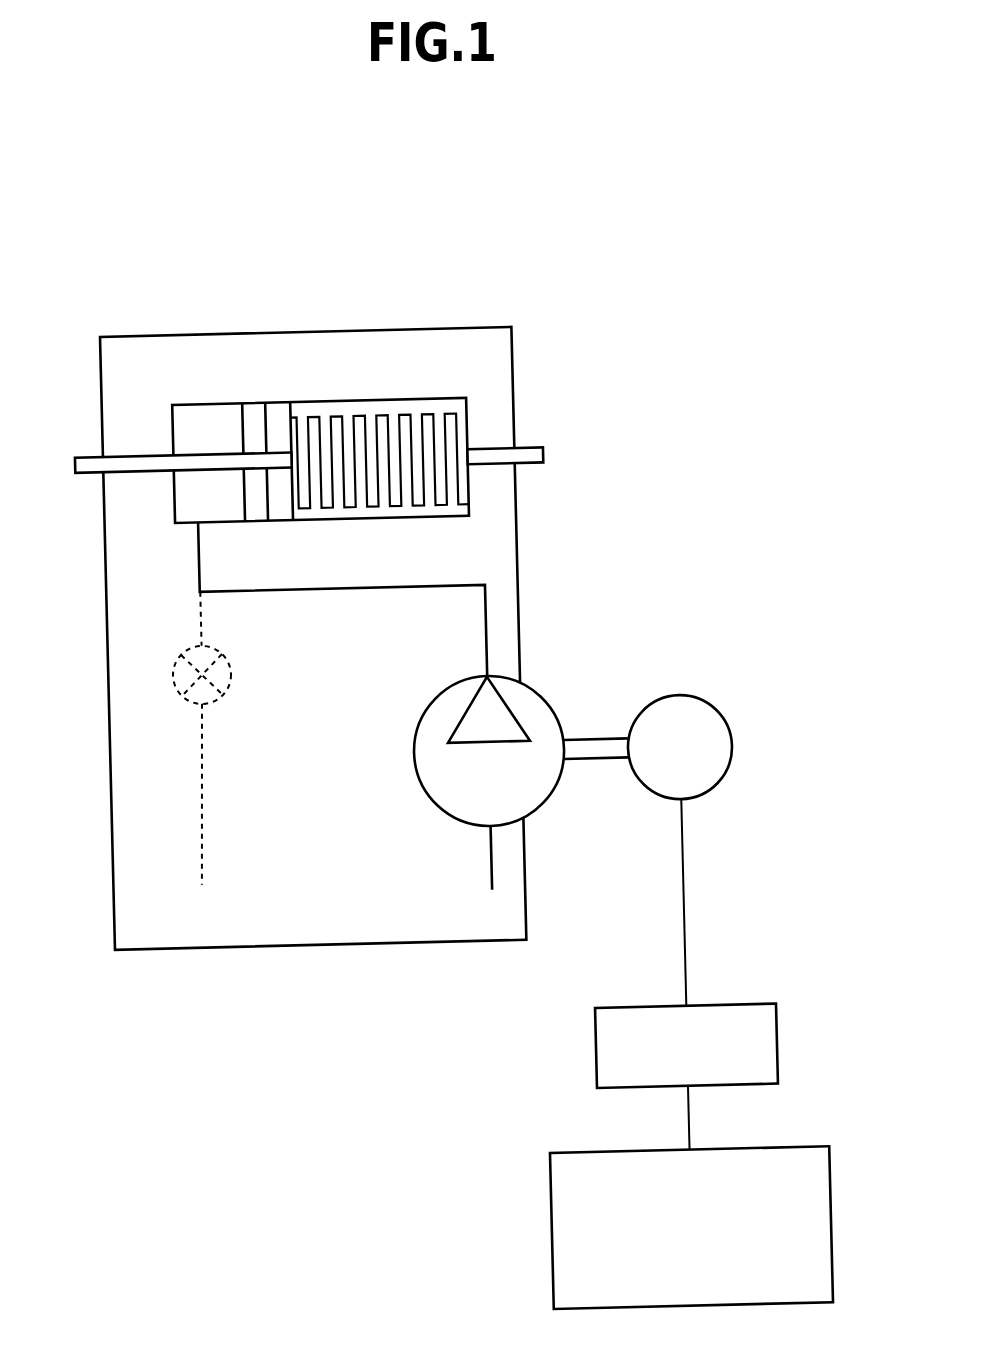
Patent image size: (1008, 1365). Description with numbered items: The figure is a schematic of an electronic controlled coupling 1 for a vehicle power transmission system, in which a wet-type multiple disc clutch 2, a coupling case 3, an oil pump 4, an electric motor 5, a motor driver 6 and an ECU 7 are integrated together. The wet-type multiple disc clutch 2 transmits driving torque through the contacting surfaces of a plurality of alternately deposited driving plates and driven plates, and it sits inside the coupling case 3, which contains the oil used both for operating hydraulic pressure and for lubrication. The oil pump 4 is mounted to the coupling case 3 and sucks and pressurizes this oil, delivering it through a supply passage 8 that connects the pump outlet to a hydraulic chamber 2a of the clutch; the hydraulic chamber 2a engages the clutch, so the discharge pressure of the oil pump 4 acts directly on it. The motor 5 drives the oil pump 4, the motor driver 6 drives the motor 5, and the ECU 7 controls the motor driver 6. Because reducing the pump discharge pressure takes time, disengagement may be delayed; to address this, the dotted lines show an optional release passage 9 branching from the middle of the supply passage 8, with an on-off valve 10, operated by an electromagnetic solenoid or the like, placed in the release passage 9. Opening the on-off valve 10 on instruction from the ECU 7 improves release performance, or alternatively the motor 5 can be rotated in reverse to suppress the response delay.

The electronic controlled coupling 1 is at (570, 322).
The wet-type multiple disc clutch 2 is at (469, 407).
The hydraulic chamber 2a is at (196, 500).
The coupling case 3 is at (367, 330).
The oil pump 4 is at (543, 695).
The electric motor 5 is at (700, 697).
The motor driver 6 is at (780, 1026).
The electric control unit 7 is at (833, 1174).
The supply passage 8 is at (345, 592).
The release passage 9 is at (198, 786).
The on-off valve 10 is at (173, 678).